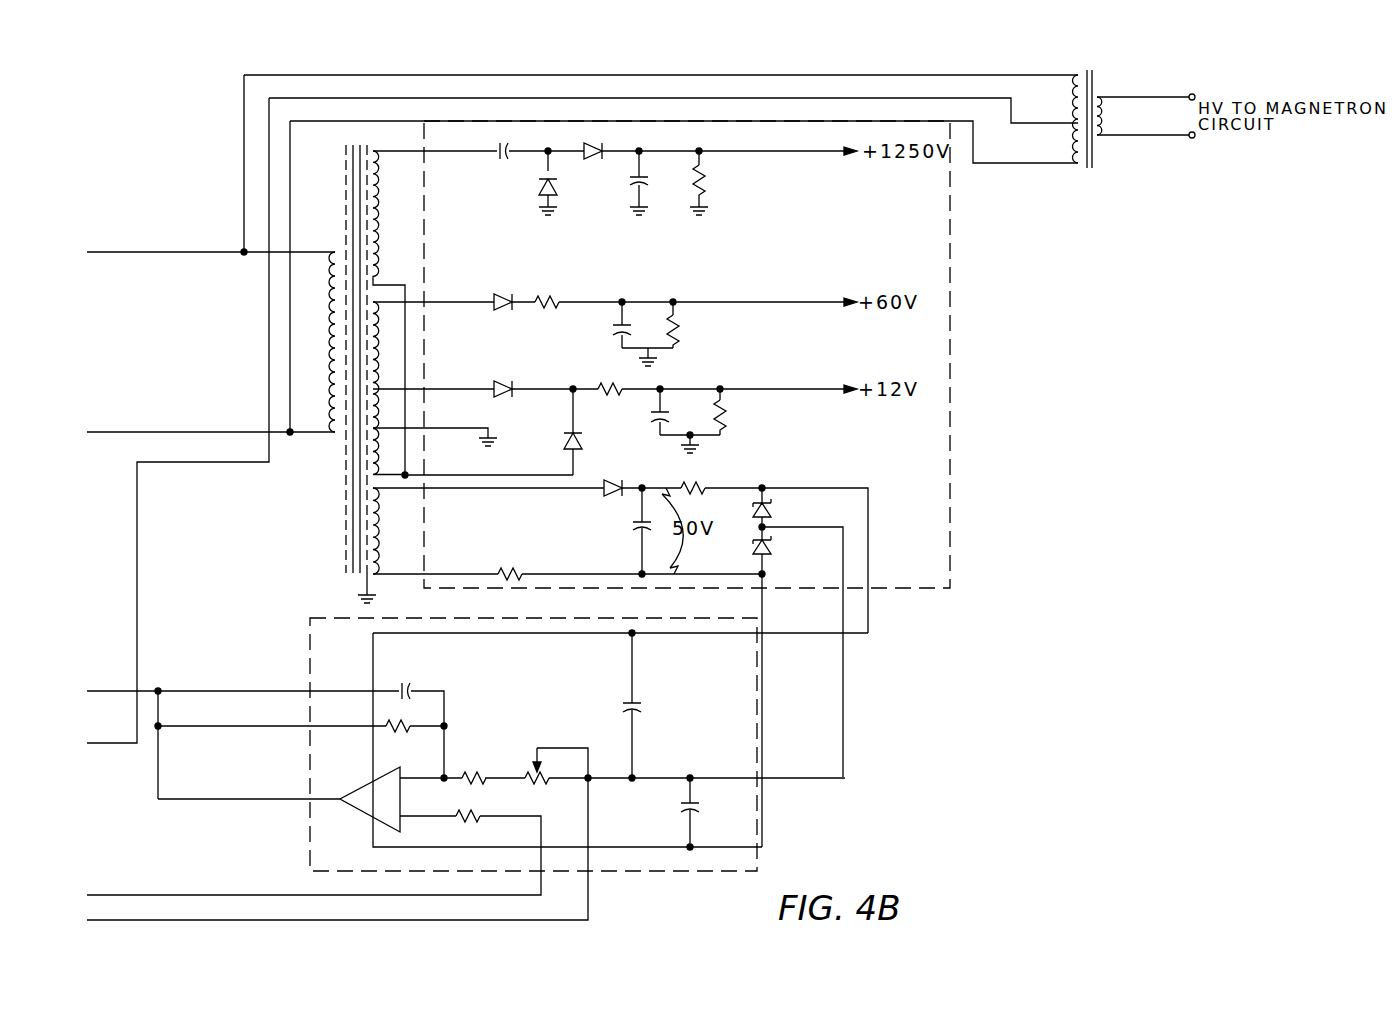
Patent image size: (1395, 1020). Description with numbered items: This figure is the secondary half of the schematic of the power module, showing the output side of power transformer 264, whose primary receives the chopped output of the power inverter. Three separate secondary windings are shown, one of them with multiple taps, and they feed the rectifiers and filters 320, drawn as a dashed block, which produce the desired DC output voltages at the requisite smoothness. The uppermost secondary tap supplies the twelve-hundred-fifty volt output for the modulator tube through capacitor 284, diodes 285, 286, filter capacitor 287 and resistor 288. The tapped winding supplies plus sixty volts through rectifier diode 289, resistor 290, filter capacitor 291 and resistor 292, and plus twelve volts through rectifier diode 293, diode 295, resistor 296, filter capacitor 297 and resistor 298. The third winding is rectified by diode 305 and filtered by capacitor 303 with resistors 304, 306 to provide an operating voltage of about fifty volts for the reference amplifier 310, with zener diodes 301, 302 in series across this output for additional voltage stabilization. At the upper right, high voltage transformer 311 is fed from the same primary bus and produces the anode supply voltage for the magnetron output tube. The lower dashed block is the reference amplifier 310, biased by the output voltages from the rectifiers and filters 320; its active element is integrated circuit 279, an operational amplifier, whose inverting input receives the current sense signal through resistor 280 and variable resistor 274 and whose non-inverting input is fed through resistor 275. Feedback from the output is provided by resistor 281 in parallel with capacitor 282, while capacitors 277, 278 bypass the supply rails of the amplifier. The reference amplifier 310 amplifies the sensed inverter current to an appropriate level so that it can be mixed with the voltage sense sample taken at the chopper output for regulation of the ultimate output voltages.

The power transformer 264 is at (344, 165).
The capacitor 284 is at (499, 144).
The diode 285 is at (545, 185).
The diode 286 is at (599, 144).
The capacitor 287 is at (632, 181).
The resistor 288 is at (705, 178).
The diode 289 is at (505, 295).
The resistor 290 is at (544, 298).
The capacitor 291 is at (609, 330).
The resistor 292 is at (679, 328).
The diode 293 is at (503, 383).
The diode 295 is at (566, 436).
The resistor 296 is at (604, 383).
The capacitor 297 is at (649, 415).
The resistor 298 is at (727, 410).
The zener diode 301 is at (770, 505).
The zener diode 302 is at (770, 543).
The capacitor 303 is at (632, 527).
The resistor 304 is at (513, 568).
The diode 305 is at (618, 481).
The resistor 306 is at (694, 483).
The high voltage transformer 311 is at (1091, 72).
The reference amplifier 310 is at (306, 633).
The rectifiers and filters 320 is at (952, 313).
The variable resistor 274 is at (545, 784).
The resistor 275 is at (474, 810).
The capacitor 277 is at (646, 709).
The capacitor 278 is at (702, 808).
The integrated circuit 279 is at (363, 787).
The resistor 280 is at (473, 771).
The resistor 281 is at (406, 721).
The capacitor 282 is at (410, 681).